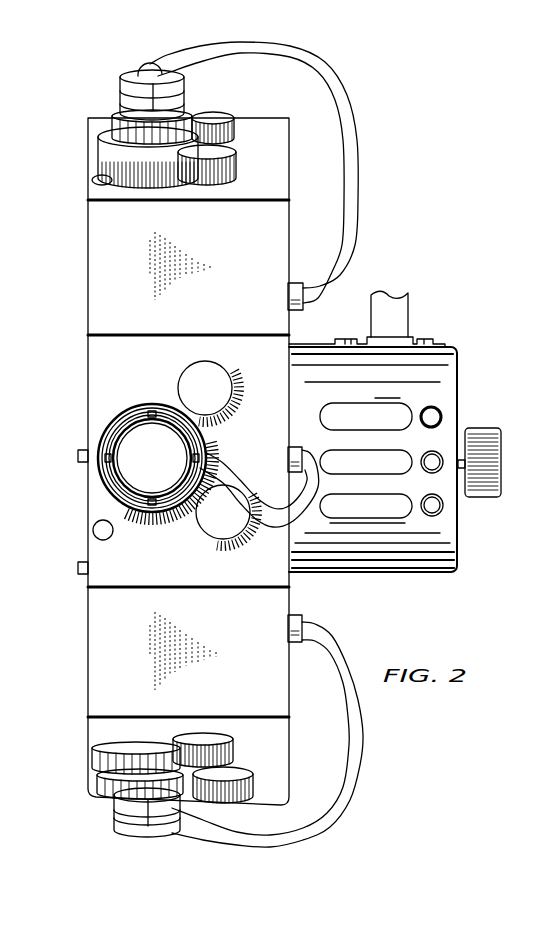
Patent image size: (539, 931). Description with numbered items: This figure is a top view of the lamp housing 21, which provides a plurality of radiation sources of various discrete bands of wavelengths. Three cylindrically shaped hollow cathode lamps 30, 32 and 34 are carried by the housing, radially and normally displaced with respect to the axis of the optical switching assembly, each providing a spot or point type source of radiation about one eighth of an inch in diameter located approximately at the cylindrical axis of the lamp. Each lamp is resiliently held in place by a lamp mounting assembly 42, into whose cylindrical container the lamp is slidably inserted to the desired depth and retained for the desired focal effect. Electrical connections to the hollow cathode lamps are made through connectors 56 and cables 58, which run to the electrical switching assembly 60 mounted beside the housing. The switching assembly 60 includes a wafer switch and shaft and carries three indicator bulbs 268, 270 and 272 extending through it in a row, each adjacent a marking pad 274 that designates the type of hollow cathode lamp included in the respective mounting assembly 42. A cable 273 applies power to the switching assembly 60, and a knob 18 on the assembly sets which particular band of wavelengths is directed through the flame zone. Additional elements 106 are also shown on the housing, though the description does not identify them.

The knob 18 is at (501, 452).
The lamp housing 21 is at (102, 240).
The hollow cathode lamp 30 is at (110, 790).
The hollow cathode lamp 32 is at (112, 433).
The hollow cathode lamp 34 is at (125, 127).
The lamp mounting assembly 42 is at (140, 157).
The connector 56 is at (120, 91).
The cable 58 is at (346, 97).
The electrical switching assembly 60 is at (397, 573).
The knob 106 is at (209, 114).
The indicator bulb 268 is at (444, 510).
The indicator bulb 270 is at (441, 457).
The indicator bulb 272 is at (442, 411).
The cable 273 is at (388, 298).
The marking pad 274 is at (322, 408).